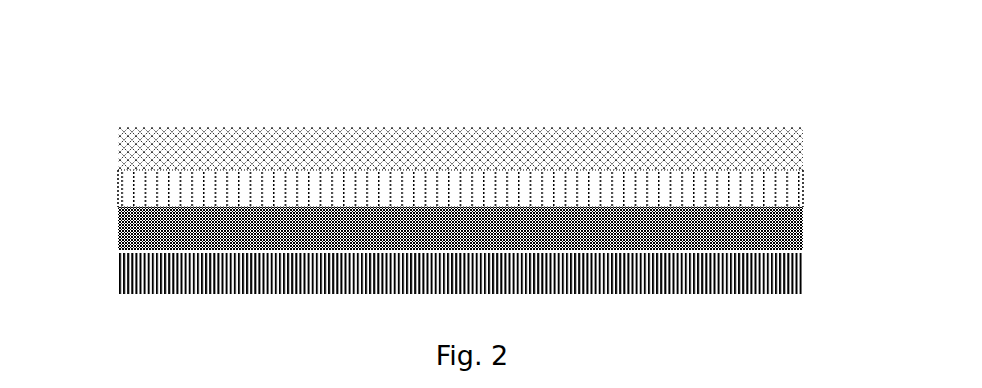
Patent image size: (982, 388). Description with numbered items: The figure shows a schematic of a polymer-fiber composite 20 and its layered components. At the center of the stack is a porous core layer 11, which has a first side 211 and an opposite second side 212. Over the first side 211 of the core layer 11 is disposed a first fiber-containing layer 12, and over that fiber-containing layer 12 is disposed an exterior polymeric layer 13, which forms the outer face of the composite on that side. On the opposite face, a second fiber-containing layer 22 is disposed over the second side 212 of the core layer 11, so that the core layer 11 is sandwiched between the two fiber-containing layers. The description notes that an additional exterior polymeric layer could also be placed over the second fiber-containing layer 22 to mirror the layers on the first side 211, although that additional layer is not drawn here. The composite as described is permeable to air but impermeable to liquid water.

The composite 20 is at (150, 105).
The exterior polymeric layer 13 is at (803, 152).
The fiber-containing layer 12 is at (803, 187).
The porous core layer 11 is at (803, 228).
The second fiber-containing layer 22 is at (803, 273).
The first side 211 is at (117, 167).
The second side 212 is at (117, 210).